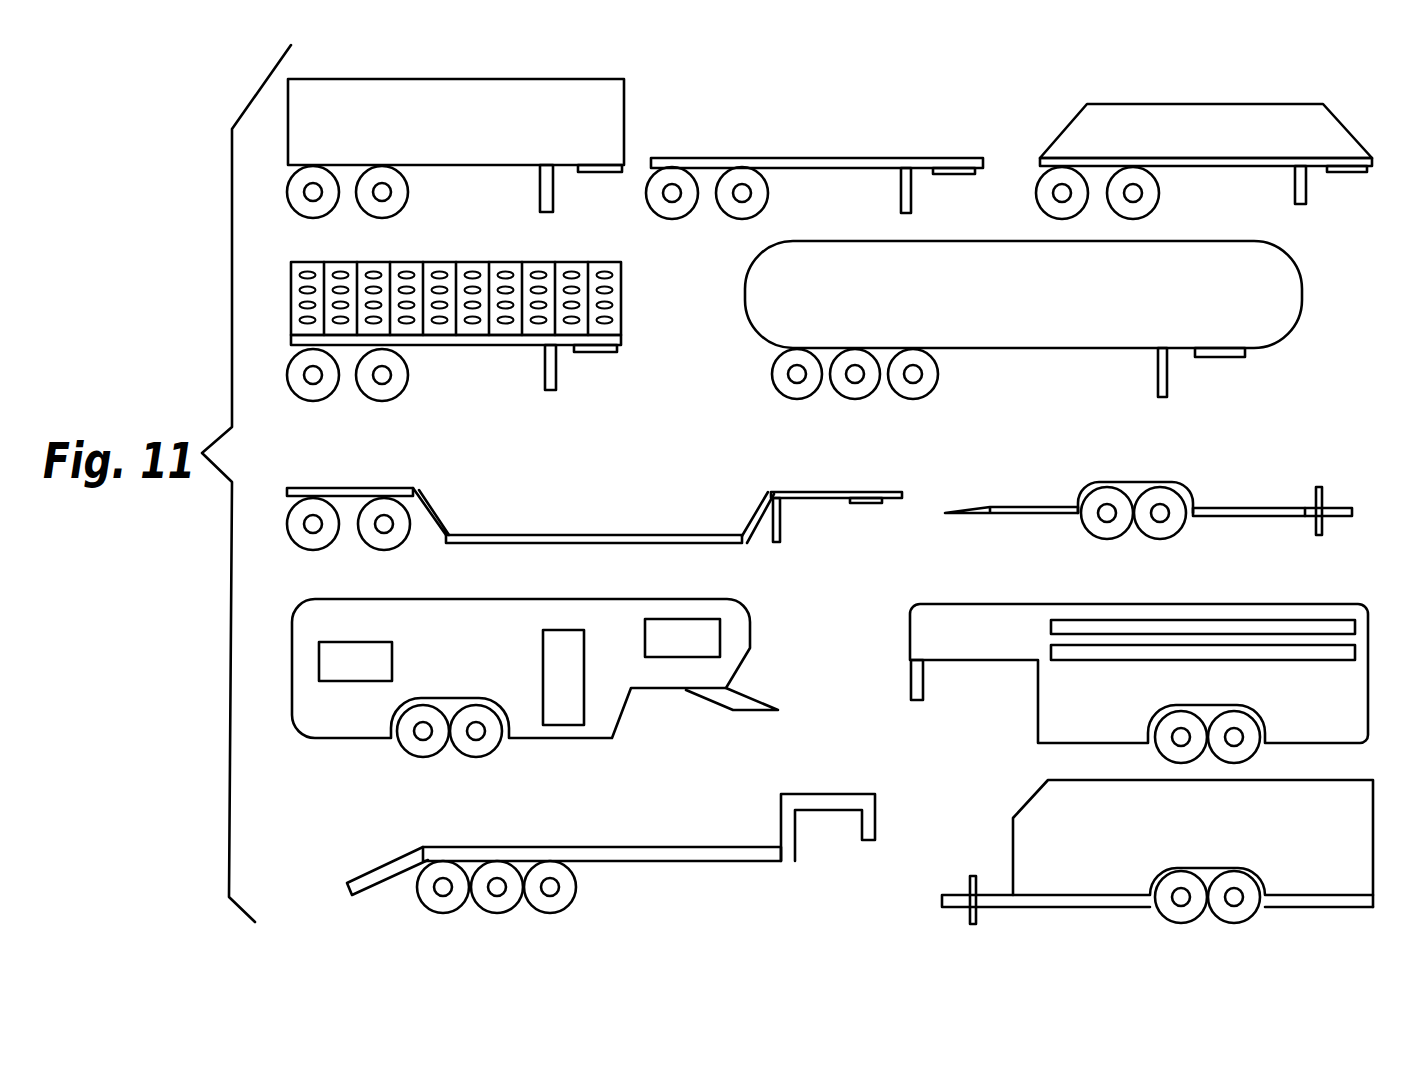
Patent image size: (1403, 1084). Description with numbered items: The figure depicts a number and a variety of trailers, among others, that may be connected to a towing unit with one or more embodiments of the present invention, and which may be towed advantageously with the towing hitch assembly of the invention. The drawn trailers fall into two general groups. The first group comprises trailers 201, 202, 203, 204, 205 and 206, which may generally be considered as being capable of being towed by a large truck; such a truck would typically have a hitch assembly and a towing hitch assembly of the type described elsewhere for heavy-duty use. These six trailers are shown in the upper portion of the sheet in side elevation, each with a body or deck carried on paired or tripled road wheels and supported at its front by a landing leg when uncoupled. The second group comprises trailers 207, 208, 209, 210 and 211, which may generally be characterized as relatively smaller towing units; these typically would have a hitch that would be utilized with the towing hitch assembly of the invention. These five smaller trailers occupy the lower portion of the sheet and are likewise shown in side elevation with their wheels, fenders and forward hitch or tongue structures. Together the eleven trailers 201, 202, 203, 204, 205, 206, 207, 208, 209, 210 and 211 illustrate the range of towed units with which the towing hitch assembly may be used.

The trailer 201 is at (570, 134).
The trailer 202 is at (838, 128).
The trailer 203 is at (1222, 140).
The trailer 204 is at (493, 255).
The trailer 205 is at (1025, 306).
The trailer 206 is at (602, 520).
The trailer 207 is at (1257, 498).
The trailer 208 is at (487, 675).
The trailer 209 is at (1141, 700).
The trailer 210 is at (631, 833).
The trailer 211 is at (1169, 855).